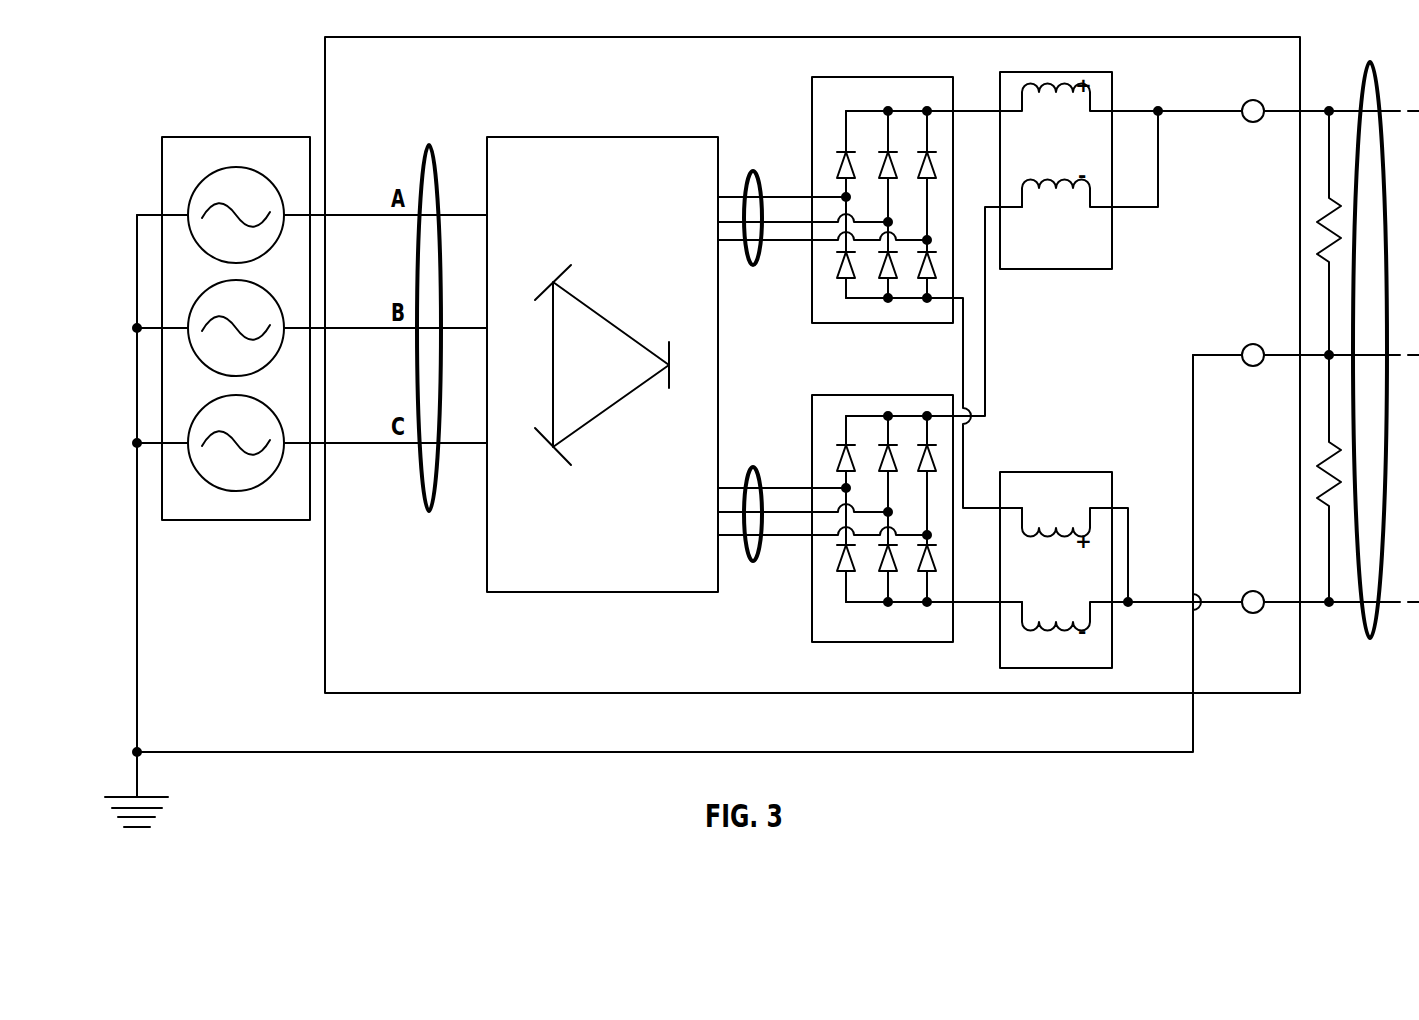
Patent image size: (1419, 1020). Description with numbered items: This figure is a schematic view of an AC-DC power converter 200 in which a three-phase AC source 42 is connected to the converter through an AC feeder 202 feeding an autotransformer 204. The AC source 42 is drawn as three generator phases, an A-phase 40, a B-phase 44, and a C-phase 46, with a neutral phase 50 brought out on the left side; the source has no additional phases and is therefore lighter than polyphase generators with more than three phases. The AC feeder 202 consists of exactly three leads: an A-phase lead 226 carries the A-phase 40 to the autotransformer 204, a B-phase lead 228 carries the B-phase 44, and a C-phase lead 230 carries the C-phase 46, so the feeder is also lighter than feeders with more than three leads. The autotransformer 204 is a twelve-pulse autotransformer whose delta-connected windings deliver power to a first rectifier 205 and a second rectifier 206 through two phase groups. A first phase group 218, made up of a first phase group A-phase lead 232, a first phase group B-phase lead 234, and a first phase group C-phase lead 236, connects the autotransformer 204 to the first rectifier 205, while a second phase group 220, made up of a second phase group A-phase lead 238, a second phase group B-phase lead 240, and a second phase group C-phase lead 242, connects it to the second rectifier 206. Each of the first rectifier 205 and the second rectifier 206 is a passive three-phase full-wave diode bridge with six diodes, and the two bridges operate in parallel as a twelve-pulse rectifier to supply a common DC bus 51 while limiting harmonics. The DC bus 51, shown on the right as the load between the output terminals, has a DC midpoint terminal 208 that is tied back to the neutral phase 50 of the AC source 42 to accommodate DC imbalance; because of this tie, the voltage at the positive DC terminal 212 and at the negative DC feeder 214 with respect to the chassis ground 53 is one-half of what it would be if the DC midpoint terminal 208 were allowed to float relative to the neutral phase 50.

The AC-DC power converter 200 is at (413, 813).
The A-phase 40 is at (220, 172).
The AC source 42 is at (237, 137).
The B-phase 44 is at (220, 285).
The AC voltage source phase C 46 is at (220, 400).
The neutral phase 50 is at (137, 560).
The DC bus 51 is at (1368, 640).
The chassis ground 53 is at (122, 797).
The AC feeder 202 is at (429, 511).
The autotransformer 204 is at (598, 137).
The first rectifier 205 is at (888, 77).
The second rectifier 206 is at (878, 642).
The DC midpoint terminal 208 is at (1253, 344).
The positive DC terminal 212 is at (1253, 100).
The negative DC feeder 214 is at (1253, 591).
The first phase group 218 is at (752, 171).
The second phase group 220 is at (752, 562).
The A-phase lead 226 is at (358, 213).
The B-phase lead 228 is at (358, 326).
The C-phase lead 230 is at (358, 441).
The first phase group A-phase lead 232 is at (802, 197).
The first phase group B-phase lead 234 is at (808, 222).
The first phase group C-phase lead 236 is at (790, 240).
The second phase group A-phase lead 238 is at (800, 488).
The second phase group B-phase lead 240 is at (803, 540).
The second phase group C-phase lead 242 is at (790, 540).